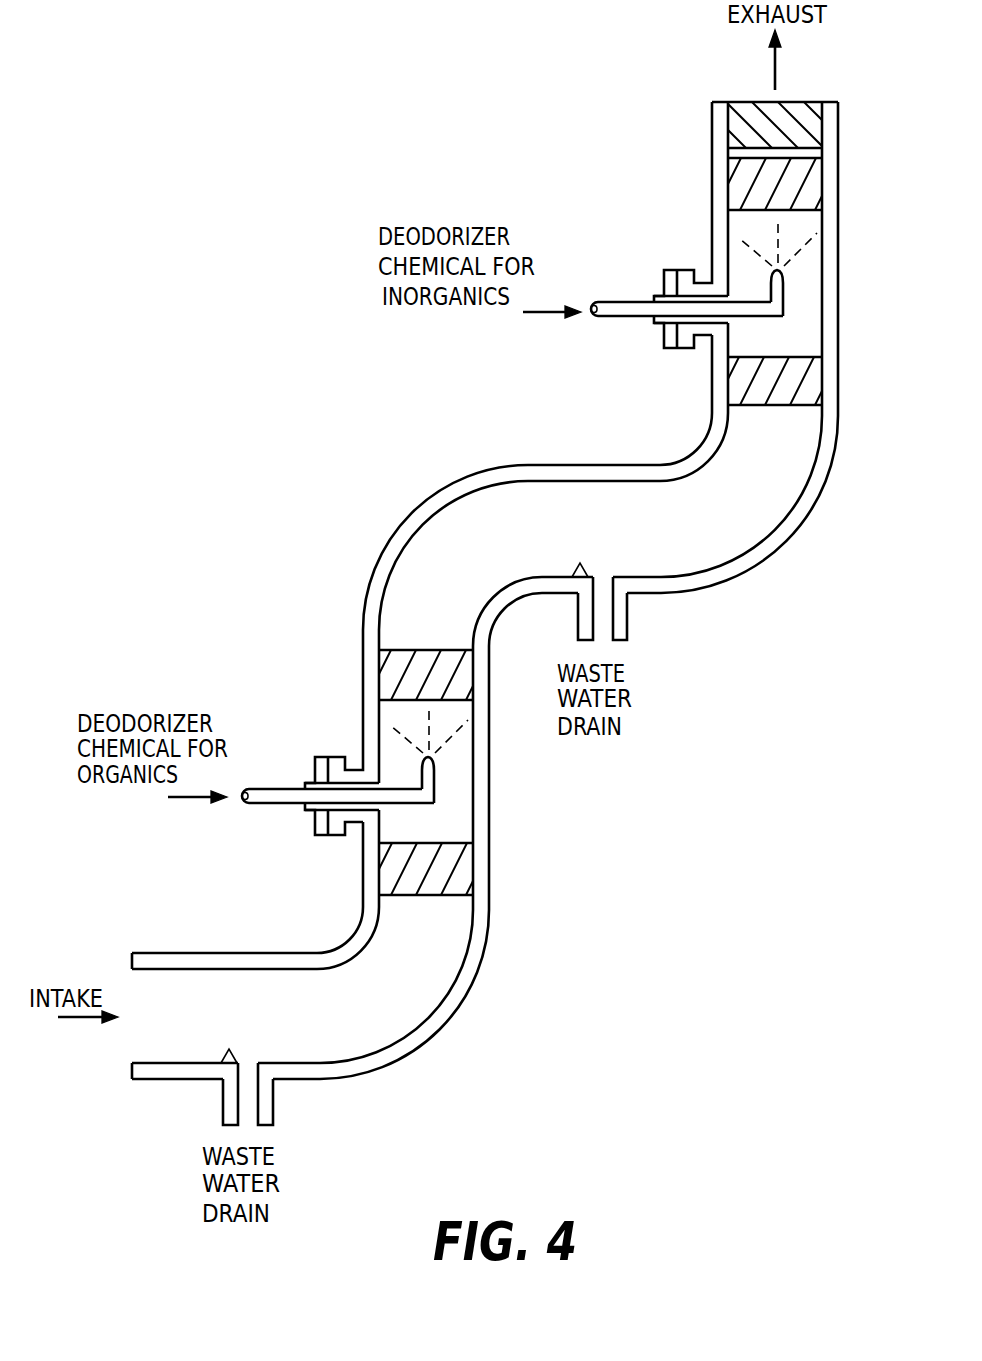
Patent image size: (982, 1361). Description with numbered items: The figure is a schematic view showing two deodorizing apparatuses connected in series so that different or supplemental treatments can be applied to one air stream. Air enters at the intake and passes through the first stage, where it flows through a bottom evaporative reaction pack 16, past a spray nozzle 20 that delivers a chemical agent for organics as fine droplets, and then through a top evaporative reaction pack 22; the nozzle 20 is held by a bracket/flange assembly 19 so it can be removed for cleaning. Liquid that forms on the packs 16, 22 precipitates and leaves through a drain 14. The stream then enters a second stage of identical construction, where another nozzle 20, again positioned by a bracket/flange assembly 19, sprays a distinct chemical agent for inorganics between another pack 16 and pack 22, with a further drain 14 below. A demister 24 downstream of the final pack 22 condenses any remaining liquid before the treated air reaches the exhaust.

The drain 14 is at (628, 608).
The bottom evaporative reaction pack 16 is at (820, 378).
The bracket/flange assembly 19 is at (667, 345).
The nozzle 20 is at (772, 267).
The top evaporative reaction pack 22 is at (732, 193).
The demister 24 is at (732, 132).